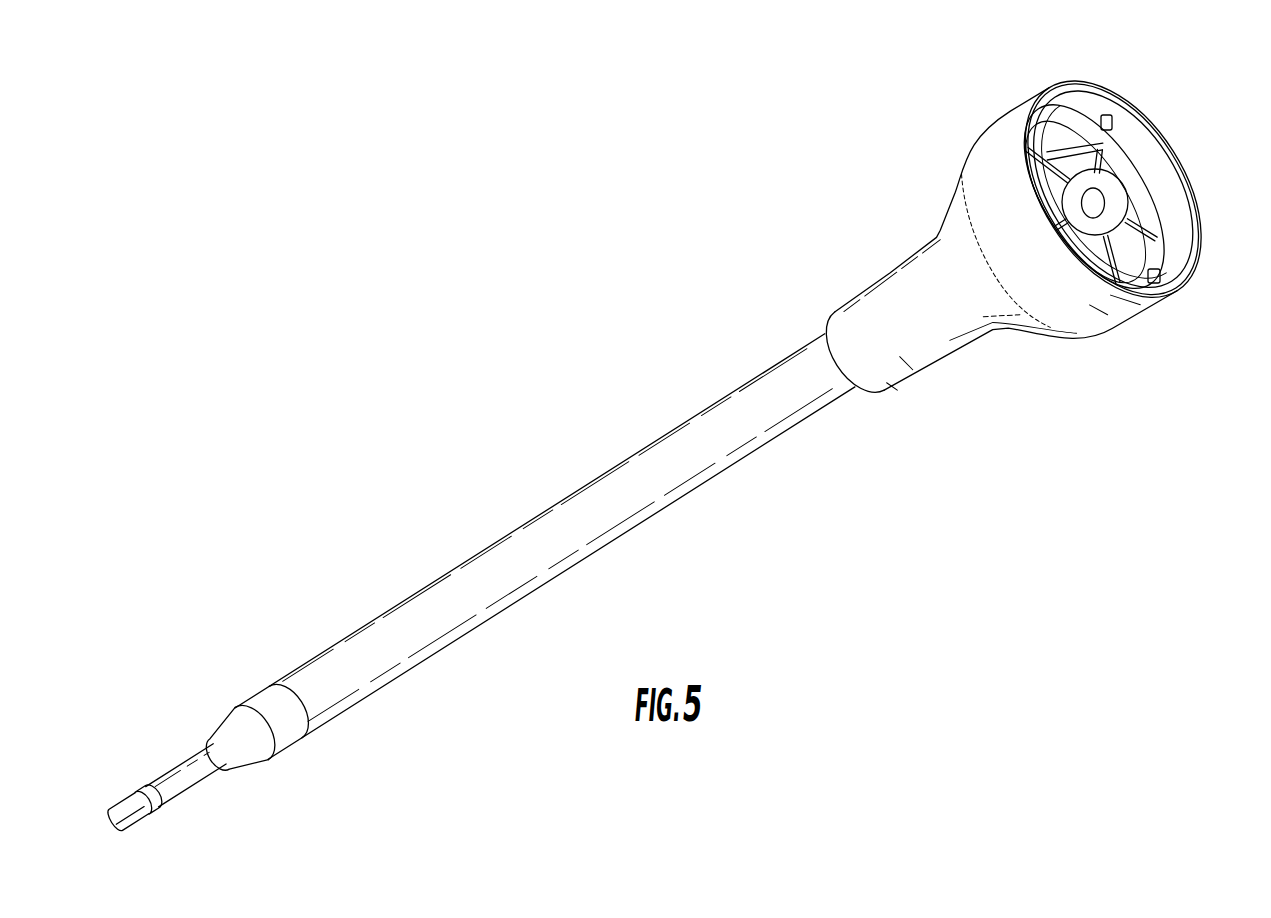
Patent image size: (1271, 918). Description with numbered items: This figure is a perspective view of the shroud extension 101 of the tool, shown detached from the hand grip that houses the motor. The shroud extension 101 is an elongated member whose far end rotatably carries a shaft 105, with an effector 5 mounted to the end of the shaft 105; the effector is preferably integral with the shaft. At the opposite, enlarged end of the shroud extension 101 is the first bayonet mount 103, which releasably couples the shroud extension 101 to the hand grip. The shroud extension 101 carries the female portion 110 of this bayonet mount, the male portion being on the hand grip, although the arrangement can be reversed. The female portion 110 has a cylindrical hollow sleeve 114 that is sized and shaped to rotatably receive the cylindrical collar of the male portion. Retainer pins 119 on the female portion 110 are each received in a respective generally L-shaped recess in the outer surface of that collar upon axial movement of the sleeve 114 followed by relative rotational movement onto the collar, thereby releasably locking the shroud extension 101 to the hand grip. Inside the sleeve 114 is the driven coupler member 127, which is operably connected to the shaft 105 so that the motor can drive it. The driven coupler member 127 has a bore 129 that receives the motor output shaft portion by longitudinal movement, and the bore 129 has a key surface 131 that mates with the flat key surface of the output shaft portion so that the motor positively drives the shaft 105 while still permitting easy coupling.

The effector 5 is at (130, 806).
The shroud extension 101 is at (700, 487).
The first bayonet mount 103 is at (1155, 345).
The shaft 105 is at (192, 789).
The female portion 110 is at (1132, 103).
The cylindrical hollow sleeve 114 is at (1157, 194).
The retainer pin 119 is at (1112, 120).
The driven coupler member 127 is at (1105, 193).
The bore 129 is at (1100, 203).
The key surface 131 is at (1093, 158).